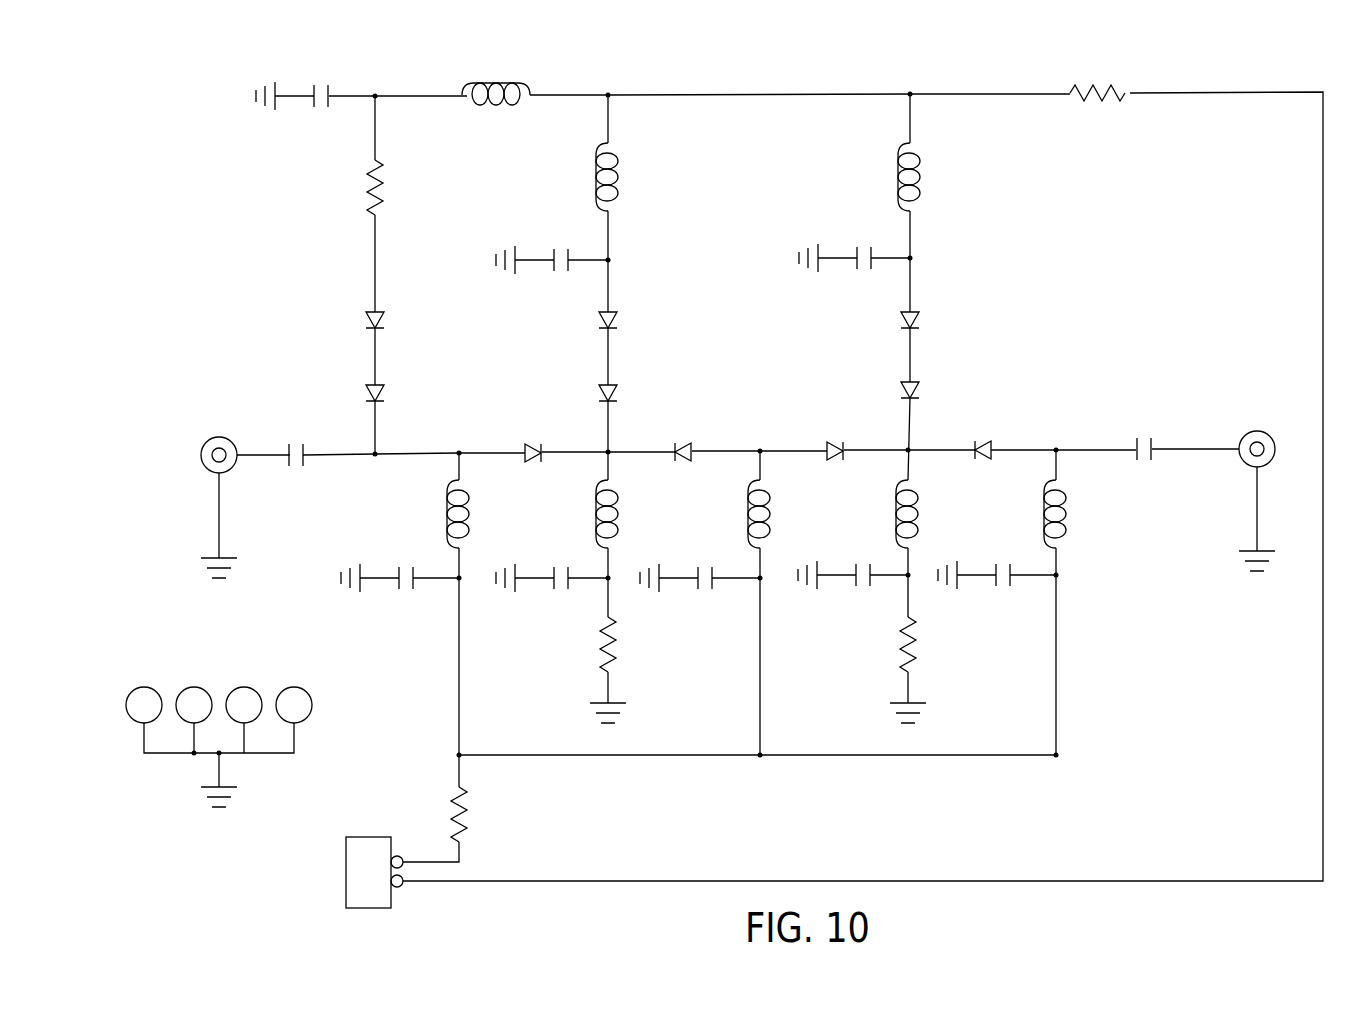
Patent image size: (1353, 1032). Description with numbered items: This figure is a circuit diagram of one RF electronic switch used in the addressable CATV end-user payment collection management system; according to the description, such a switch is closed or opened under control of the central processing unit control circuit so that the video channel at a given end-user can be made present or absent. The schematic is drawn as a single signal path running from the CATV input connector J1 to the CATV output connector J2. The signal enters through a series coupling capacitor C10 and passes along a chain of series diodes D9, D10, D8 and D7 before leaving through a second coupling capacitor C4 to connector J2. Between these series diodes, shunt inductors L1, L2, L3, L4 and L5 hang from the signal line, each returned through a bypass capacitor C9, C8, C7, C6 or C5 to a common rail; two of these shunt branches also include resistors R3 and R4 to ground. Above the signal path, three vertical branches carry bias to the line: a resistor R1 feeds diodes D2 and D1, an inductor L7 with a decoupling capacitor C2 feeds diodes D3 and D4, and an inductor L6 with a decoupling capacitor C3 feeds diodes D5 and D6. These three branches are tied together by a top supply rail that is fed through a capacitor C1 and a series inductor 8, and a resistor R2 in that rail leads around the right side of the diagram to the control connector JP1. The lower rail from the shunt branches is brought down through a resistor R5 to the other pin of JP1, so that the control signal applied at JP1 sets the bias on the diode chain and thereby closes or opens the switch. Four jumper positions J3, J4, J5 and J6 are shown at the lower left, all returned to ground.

The capacitor C1 104 C1 is at (299, 99).
The inductor 8 100U 8 is at (496, 97).
The resistor R2 100 R2 is at (1097, 94).
The resistor R1 75 R1 is at (391, 187).
The inductor L7 100U L7 is at (634, 177).
The inductor L6 100U L6 is at (935, 177).
The capacitor C2 104 C2 is at (552, 259).
The capacitor C3 104 C3 is at (854, 259).
The diode D1 S314 D1 is at (404, 387).
The diode D2 S314 D2 is at (404, 317).
The diode D3 S314 D3 is at (636, 317).
The diode D4 S314 D4 is at (636, 387).
The diode D5 S314 D5 is at (937, 317).
The diode D6 S314 D6 is at (937, 384).
The diode D7 S314 D7 is at (988, 451).
The diode D8 S314 D8 is at (842, 451).
The diode D9 S314 D9 is at (536, 453).
The diode D10 S314 D10 is at (688, 453).
The capacitor C10 104 C10 is at (299, 456).
The capacitor C4 104 C4 is at (1146, 451).
The connector J1 CATV IN J1 is at (205, 484).
The connector J2 CATV OUT J2 is at (1266, 475).
The inductor L1 100U L1 is at (485, 514).
The inductor L2 100U L2 is at (633, 514).
The inductor L3 100U L3 is at (785, 514).
The inductor L4 100U L4 is at (933, 514).
The inductor L5 100U L5 is at (1083, 514).
The capacitor C5 104 C5 is at (997, 579).
The capacitor C6 104 C6 is at (853, 579).
The capacitor C7 104 C7 is at (700, 580).
The capacitor C8 104 C8 is at (552, 580).
The capacitor C9 104 C9 is at (400, 580).
The resistor R3 220 R3 is at (625, 670).
The resistor R4 220 R4 is at (925, 670).
The resistor R5 220 R5 is at (480, 814).
The jumper J3 JP J3 is at (172, 708).
The jumper J4 JP J4 is at (194, 708).
The jumper J5 JP J5 is at (244, 708).
The jumper J6 JP J6 is at (256, 735).
The control jumper JP1 CNT JP1 is at (374, 872).